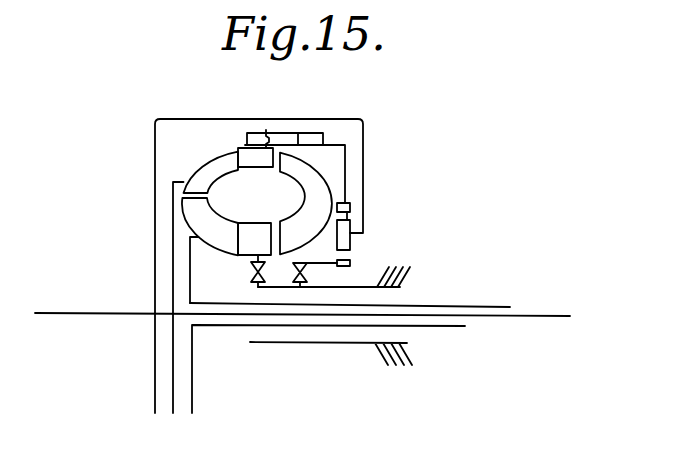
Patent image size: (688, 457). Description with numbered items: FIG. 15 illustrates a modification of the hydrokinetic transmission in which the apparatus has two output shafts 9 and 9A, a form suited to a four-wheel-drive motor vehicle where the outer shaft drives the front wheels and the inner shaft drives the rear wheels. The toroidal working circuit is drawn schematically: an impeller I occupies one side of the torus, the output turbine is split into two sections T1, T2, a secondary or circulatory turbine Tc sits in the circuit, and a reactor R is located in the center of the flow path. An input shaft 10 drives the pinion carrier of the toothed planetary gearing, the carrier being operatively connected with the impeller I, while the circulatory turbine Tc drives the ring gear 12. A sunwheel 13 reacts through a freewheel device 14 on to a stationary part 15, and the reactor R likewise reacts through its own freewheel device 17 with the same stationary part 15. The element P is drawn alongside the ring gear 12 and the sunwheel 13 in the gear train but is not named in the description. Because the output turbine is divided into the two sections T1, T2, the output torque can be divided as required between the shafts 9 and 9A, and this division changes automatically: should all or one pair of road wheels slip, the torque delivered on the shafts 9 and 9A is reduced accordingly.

The output shaft 9 is at (533, 316).
The output shaft 9A is at (428, 305).
The input shaft 10 is at (101, 313).
The ring gear 12 is at (350, 207).
The sunwheel 13 is at (351, 261).
The freewheel device 14 is at (300, 283).
The stationary part 15 is at (402, 268).
The freewheel device 17 is at (250, 275).
The impeller I is at (310, 188).
The pump P is at (350, 228).
The reactor R is at (252, 226).
The split turbine T1 is at (208, 165).
The split turbine T2 is at (198, 228).
The secondary or circulatory turbine TC is at (243, 152).